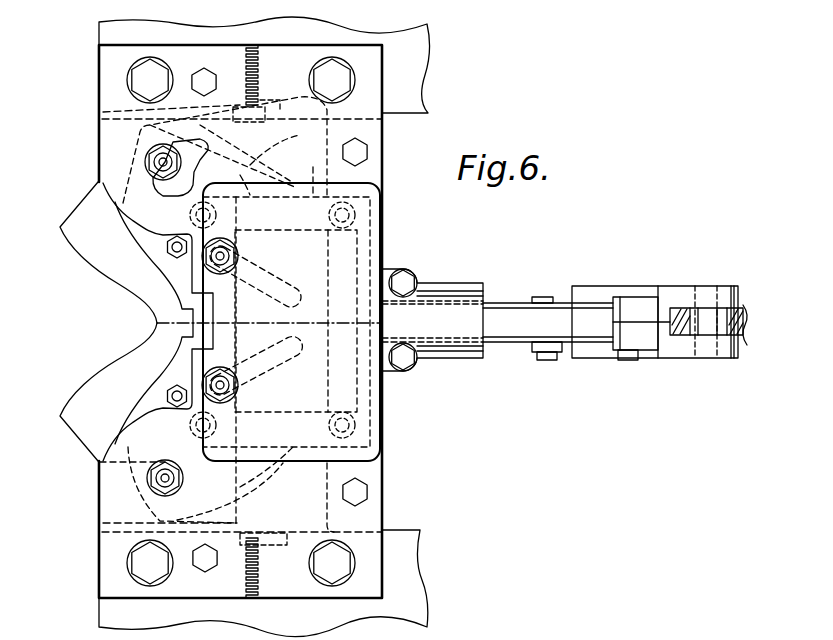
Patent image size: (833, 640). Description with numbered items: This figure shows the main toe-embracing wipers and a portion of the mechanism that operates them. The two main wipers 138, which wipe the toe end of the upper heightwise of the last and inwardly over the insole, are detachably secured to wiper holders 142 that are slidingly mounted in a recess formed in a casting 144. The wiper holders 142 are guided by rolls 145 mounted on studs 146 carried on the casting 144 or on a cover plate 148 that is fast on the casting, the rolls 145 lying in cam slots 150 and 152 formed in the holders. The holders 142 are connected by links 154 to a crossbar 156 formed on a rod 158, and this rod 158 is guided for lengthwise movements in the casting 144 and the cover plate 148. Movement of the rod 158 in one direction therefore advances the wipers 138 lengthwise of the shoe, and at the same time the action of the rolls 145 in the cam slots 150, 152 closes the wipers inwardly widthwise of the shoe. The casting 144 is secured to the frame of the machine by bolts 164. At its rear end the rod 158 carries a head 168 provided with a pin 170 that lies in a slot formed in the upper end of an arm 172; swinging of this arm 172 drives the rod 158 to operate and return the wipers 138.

The main wipers 138 is at (82, 213).
The wiper holders 142 is at (142, 223).
The casting 144 is at (107, 128).
The rolls 145 is at (170, 168).
The studs 146 is at (150, 160).
The cover plate 148 is at (373, 215).
The cam slot 150 is at (258, 505).
The cam slot 152 is at (262, 266).
The links 154 is at (286, 335).
The crossbar 156 is at (360, 258).
The rod 158 is at (503, 318).
The bolts 164 is at (148, 72).
The head 168 is at (672, 296).
The pin 170 is at (710, 323).
The arm 172 is at (743, 347).